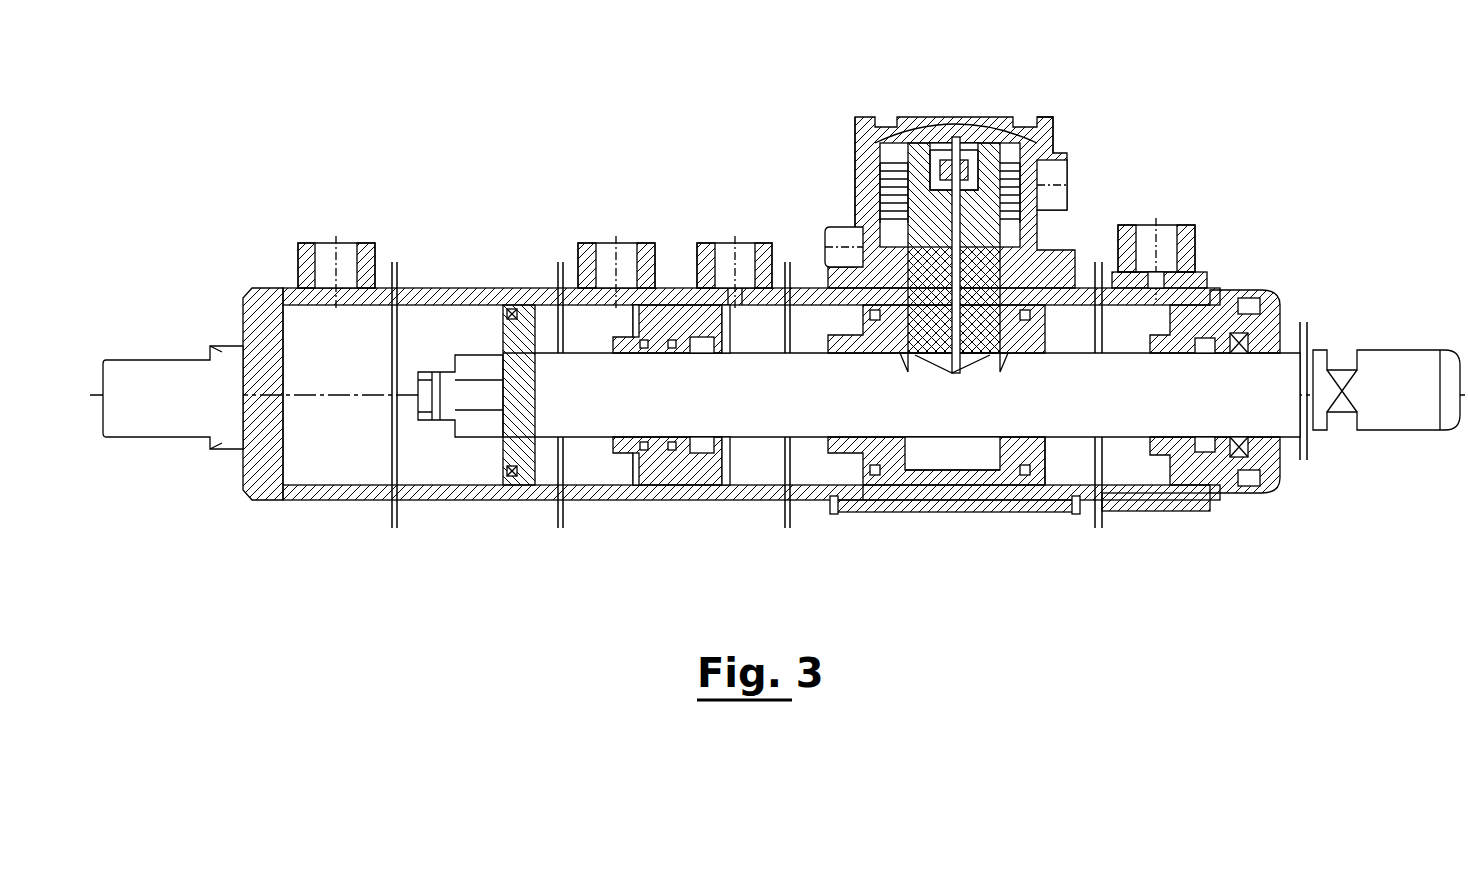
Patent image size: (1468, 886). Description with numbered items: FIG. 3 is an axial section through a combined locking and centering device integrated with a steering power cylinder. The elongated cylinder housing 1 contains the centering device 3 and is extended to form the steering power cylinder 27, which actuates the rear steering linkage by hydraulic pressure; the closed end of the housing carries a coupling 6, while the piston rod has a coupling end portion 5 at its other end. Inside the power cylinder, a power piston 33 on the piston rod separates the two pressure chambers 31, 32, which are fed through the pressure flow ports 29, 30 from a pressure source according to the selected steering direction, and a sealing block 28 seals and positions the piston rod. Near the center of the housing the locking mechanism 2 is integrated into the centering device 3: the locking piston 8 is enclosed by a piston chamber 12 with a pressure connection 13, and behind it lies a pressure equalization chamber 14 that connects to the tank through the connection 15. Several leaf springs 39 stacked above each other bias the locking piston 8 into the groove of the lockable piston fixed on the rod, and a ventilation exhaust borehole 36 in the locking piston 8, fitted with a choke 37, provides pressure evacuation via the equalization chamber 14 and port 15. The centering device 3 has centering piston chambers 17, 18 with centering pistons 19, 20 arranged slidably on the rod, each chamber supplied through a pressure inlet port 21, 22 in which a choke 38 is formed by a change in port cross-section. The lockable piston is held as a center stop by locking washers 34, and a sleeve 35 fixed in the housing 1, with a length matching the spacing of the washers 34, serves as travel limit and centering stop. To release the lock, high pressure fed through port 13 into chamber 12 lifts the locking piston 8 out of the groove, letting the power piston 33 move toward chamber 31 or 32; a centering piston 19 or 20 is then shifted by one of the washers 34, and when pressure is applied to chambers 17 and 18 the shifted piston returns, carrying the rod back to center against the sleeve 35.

The housing 1 is at (470, 288).
The locking mechanism 2 is at (1075, 208).
The centering device 3 is at (1245, 283).
The coupling end portion 5 is at (1392, 348).
The coupling 6 is at (150, 425).
The locking piston 8 is at (855, 154).
The piston chamber 12 is at (889, 375).
The pressure connection 13 is at (832, 236).
The pressure equalization chamber 14 is at (937, 137).
The connection 15 is at (1067, 178).
The centering piston chamber 17 is at (767, 342).
The centering piston chamber 18 is at (1138, 342).
The centering piston 19 is at (862, 490).
The centering piston 20 is at (1043, 495).
The pressure inlet port 21 is at (720, 250).
The pressure inlet port 22 is at (1148, 232).
The steering power cylinder 27 is at (345, 510).
The sealing block 28 is at (688, 500).
The pressure flow port 29 is at (335, 255).
The pressure flow port 30 is at (622, 245).
The pressure chamber 31 is at (356, 367).
The pressure chamber 32 is at (602, 342).
The power piston 33 is at (508, 503).
The locking washers 34 is at (989, 375).
The sleeve 35 is at (963, 495).
The ventilation exhaust borehole 36 is at (1053, 127).
The choke 37 is at (985, 143).
The choke 38 is at (735, 295).
The leaf springs 39 is at (891, 163).